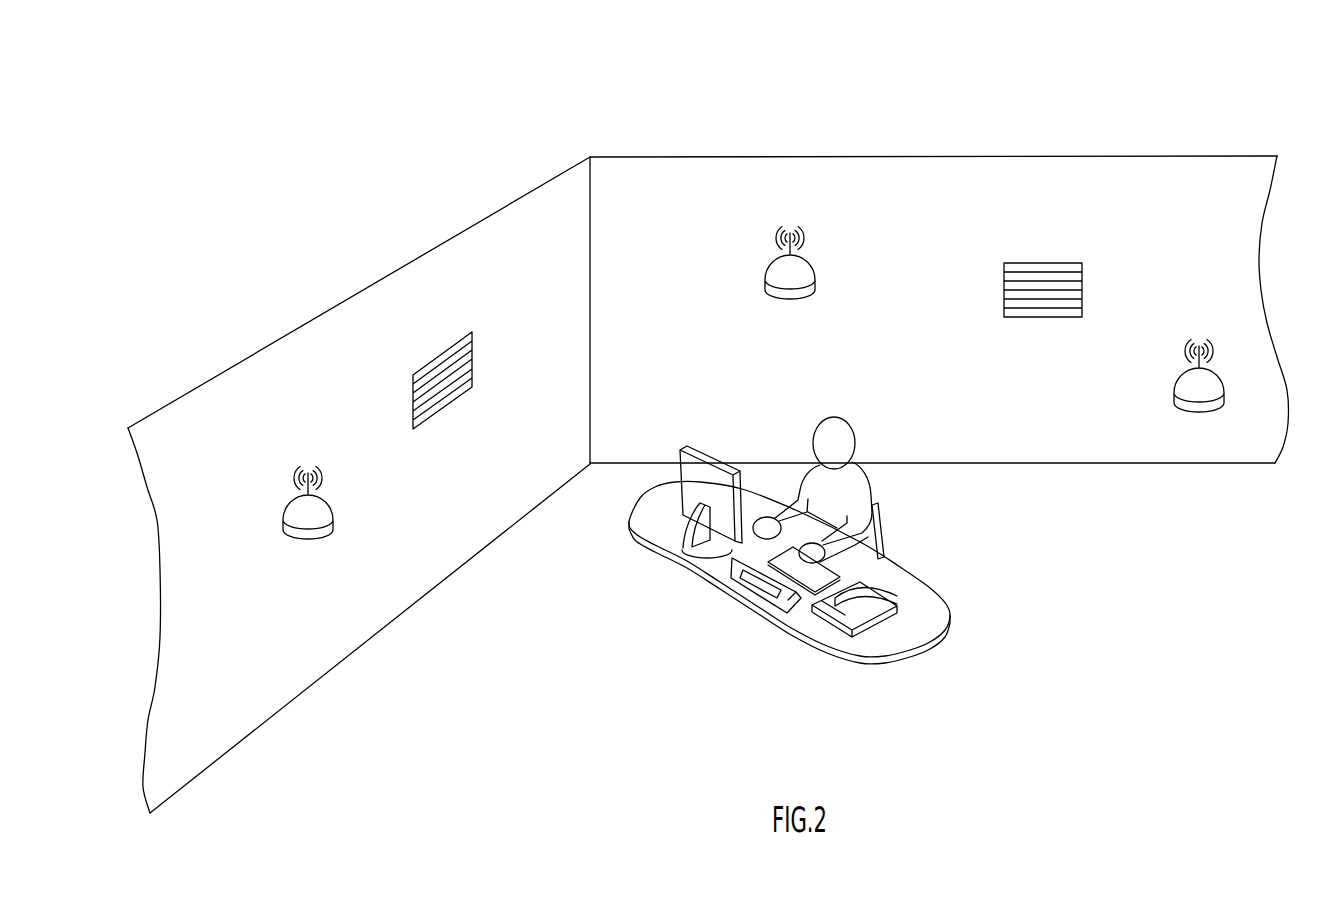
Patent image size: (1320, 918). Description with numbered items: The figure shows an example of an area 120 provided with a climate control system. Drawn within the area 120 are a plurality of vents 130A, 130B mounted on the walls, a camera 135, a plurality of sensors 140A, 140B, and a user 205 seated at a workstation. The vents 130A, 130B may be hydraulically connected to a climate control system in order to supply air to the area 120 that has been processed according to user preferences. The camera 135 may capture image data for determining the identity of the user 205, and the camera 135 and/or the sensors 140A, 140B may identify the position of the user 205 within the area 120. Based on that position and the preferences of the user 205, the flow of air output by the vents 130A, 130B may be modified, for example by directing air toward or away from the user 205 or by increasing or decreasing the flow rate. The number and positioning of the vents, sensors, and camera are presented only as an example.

The area 120 is at (1218, 113).
The vent 130A is at (413, 398).
The vent 130B is at (1082, 285).
The camera 135 is at (763, 293).
The sensor 140A is at (317, 538).
The sensor 140B is at (1178, 403).
The user 205 is at (856, 436).